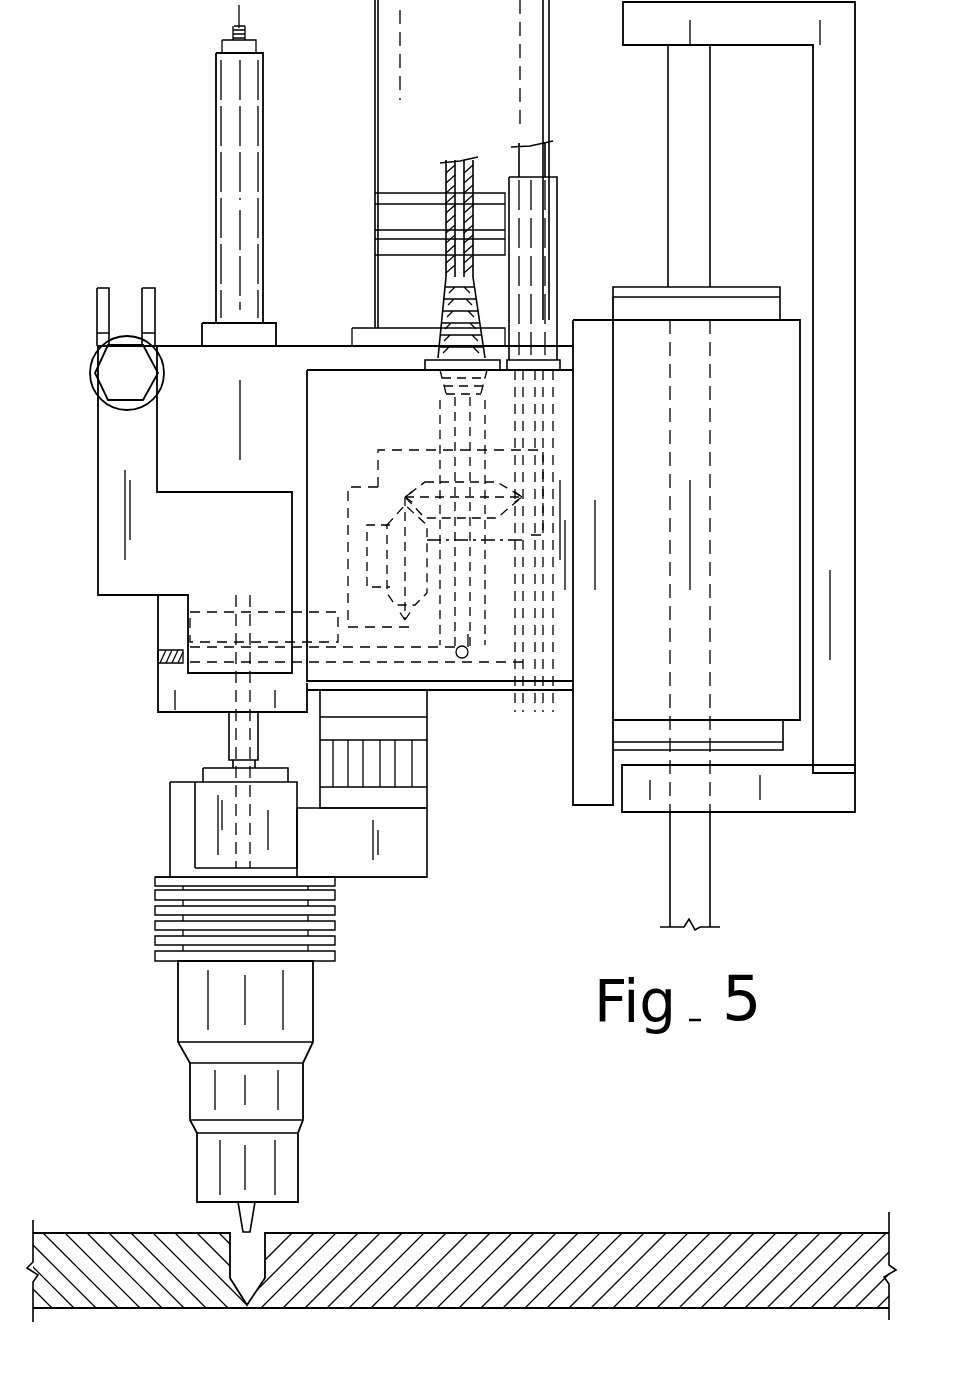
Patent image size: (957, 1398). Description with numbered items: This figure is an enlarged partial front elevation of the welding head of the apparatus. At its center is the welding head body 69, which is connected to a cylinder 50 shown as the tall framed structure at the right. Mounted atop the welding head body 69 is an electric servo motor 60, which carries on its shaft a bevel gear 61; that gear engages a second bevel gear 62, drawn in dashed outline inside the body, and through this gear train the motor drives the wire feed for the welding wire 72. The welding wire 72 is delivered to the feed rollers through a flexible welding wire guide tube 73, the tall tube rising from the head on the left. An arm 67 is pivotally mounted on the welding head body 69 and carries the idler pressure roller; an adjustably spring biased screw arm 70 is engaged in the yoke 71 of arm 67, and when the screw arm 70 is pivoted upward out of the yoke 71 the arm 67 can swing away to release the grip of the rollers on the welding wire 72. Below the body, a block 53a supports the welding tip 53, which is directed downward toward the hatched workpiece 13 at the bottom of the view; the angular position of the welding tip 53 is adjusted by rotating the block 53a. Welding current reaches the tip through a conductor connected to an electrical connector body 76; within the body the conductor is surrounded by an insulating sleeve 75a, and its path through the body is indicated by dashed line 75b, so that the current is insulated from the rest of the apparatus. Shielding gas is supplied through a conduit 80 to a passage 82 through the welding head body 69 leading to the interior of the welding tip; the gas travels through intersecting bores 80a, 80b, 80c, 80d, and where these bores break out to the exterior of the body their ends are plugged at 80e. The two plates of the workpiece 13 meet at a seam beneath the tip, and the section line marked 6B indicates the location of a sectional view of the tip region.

The workpiece plates with weld seam 13 is at (457, 1233).
The cylinder 50 is at (800, 540).
The welding tip 53 is at (313, 1005).
The block 53a is at (170, 830).
The electric servo motor 60 is at (375, 70).
The bevel gear 61 is at (508, 483).
The second bevel gear 62 is at (440, 607).
The arm 67 is at (98, 483).
The welding head body 69 is at (318, 345).
The screw arm 70 is at (95, 386).
The yoke 71 is at (97, 320).
The welding wire 72 is at (241, 16).
The flexible welding wire guide tube 73 is at (263, 172).
The insulating sleeve 75a is at (553, 392).
The conductor path 75b is at (532, 251).
The electrical connector body 76 is at (428, 765).
The conduit 80 is at (446, 184).
The bore 80a is at (440, 425).
The bore 80b is at (469, 658).
The bore 80c is at (425, 660).
The bore 80d is at (237, 698).
The plug 80e is at (158, 657).
The passage 82 is at (468, 635).
The section line 6B is at (190, 607).